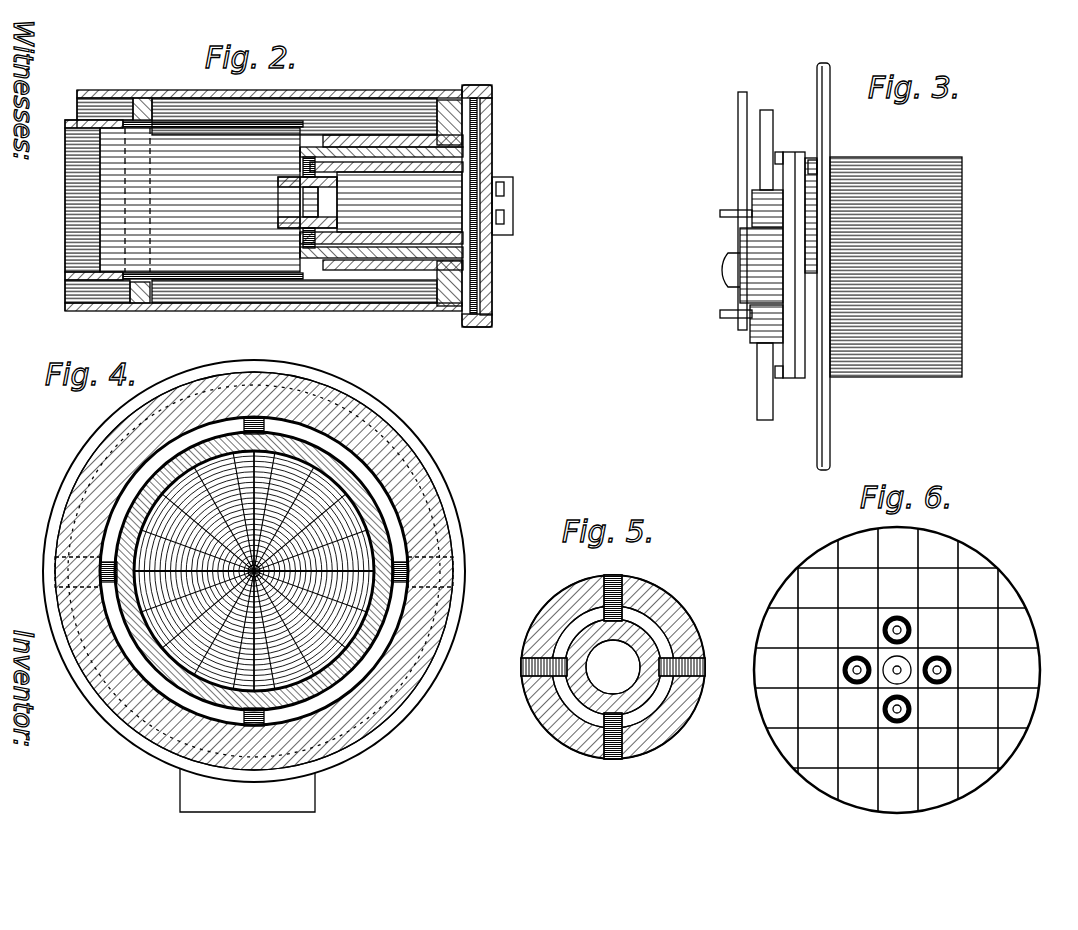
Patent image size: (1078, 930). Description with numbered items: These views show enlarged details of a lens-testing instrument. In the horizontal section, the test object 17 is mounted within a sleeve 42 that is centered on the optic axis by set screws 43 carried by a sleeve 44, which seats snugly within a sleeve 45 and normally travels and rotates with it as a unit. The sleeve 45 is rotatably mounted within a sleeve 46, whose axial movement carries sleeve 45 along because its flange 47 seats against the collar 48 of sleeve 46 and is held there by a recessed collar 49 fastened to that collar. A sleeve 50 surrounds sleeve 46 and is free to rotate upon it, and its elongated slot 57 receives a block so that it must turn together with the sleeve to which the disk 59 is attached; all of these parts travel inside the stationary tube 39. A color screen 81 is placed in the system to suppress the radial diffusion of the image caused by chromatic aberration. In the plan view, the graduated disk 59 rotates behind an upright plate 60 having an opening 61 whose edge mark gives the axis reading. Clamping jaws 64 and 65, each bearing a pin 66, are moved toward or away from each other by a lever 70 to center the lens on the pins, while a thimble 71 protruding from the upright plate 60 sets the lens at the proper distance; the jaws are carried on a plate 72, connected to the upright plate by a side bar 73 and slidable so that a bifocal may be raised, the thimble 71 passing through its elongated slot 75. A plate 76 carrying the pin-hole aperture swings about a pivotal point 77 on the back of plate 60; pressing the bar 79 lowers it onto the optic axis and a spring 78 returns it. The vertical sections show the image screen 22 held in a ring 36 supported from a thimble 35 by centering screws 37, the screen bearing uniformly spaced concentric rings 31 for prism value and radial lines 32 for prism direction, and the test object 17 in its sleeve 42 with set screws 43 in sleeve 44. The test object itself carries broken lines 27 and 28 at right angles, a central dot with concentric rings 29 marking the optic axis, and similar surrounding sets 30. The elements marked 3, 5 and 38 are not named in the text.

In FIG. 2, the casing 3 is at (263, 200).
In FIG. 2, the casing portion 5 is at (311, 130).
In FIG. 2, the test object 17 is at (300, 193).
In FIG. 5, the test object 17 is at (625, 652).
In FIG. 4, the image screen 22 is at (330, 660).
In FIG. 6, the set of broken lines 27 is at (838, 550).
In FIG. 6, the set of broken lines 28 is at (940, 570).
In FIG. 6, the central dot and concentric rings 29 is at (887, 676).
In FIG. 6, the similar sets of dot and rings 30 is at (882, 718).
In FIG. 4, the concentric rings 31 is at (345, 527).
In FIG. 4, the radial lines 32 is at (347, 487).
In FIG. 4, the thimble 35 is at (430, 603).
In FIG. 4, the ring 36 is at (300, 615).
In FIG. 4, the centering screws 37 is at (408, 558).
In FIG. 2, the screw 38 is at (88, 132).
In FIG. 3, the stationary tube 39 is at (950, 370).
In FIG. 2, the sleeve 42 is at (303, 238).
In FIG. 5, the sleeve 42 is at (650, 702).
In FIG. 2, the set screws 43 is at (293, 235).
In FIG. 5, the set screws 43 is at (530, 650).
In FIG. 2, the sleeve 44 is at (405, 240).
In FIG. 5, the sleeve 44 is at (560, 735).
In FIG. 2, the sleeve 45 is at (367, 280).
In FIG. 2, the sleeve 46 is at (393, 280).
In FIG. 2, the flange 47 is at (472, 143).
In FIG. 2, the collar 48 is at (453, 293).
In FIG. 2, the recessed collar 49 is at (470, 298).
In FIG. 2, the sleeve 50 is at (340, 256).
In FIG. 2, the elongated slot 57 is at (366, 128).
In FIG. 3, the disk 59 is at (830, 430).
In FIG. 3, the upright plate 60 is at (800, 190).
In FIG. 3, the opening 61 is at (808, 240).
In FIG. 3, the clamping jaw 64 is at (752, 333).
In FIG. 3, the clamping jaw 65 is at (756, 205).
In FIG. 3, the pin 66 is at (722, 316).
In FIG. 3, the lever 70 is at (738, 112).
In FIG. 3, the thimble 71 is at (745, 262).
In FIG. 3, the plate 72 is at (787, 258).
In FIG. 3, the side bar 73 is at (787, 152).
In FIG. 3, the elongated slot 75 is at (785, 312).
In FIG. 3, the plate 76 is at (812, 228).
In FIG. 3, the pivotal point 77 is at (812, 170).
In FIG. 3, the spring 78 is at (805, 150).
In FIG. 3, the bar 79 is at (815, 180).
In FIG. 2, the color screen 81 is at (337, 212).